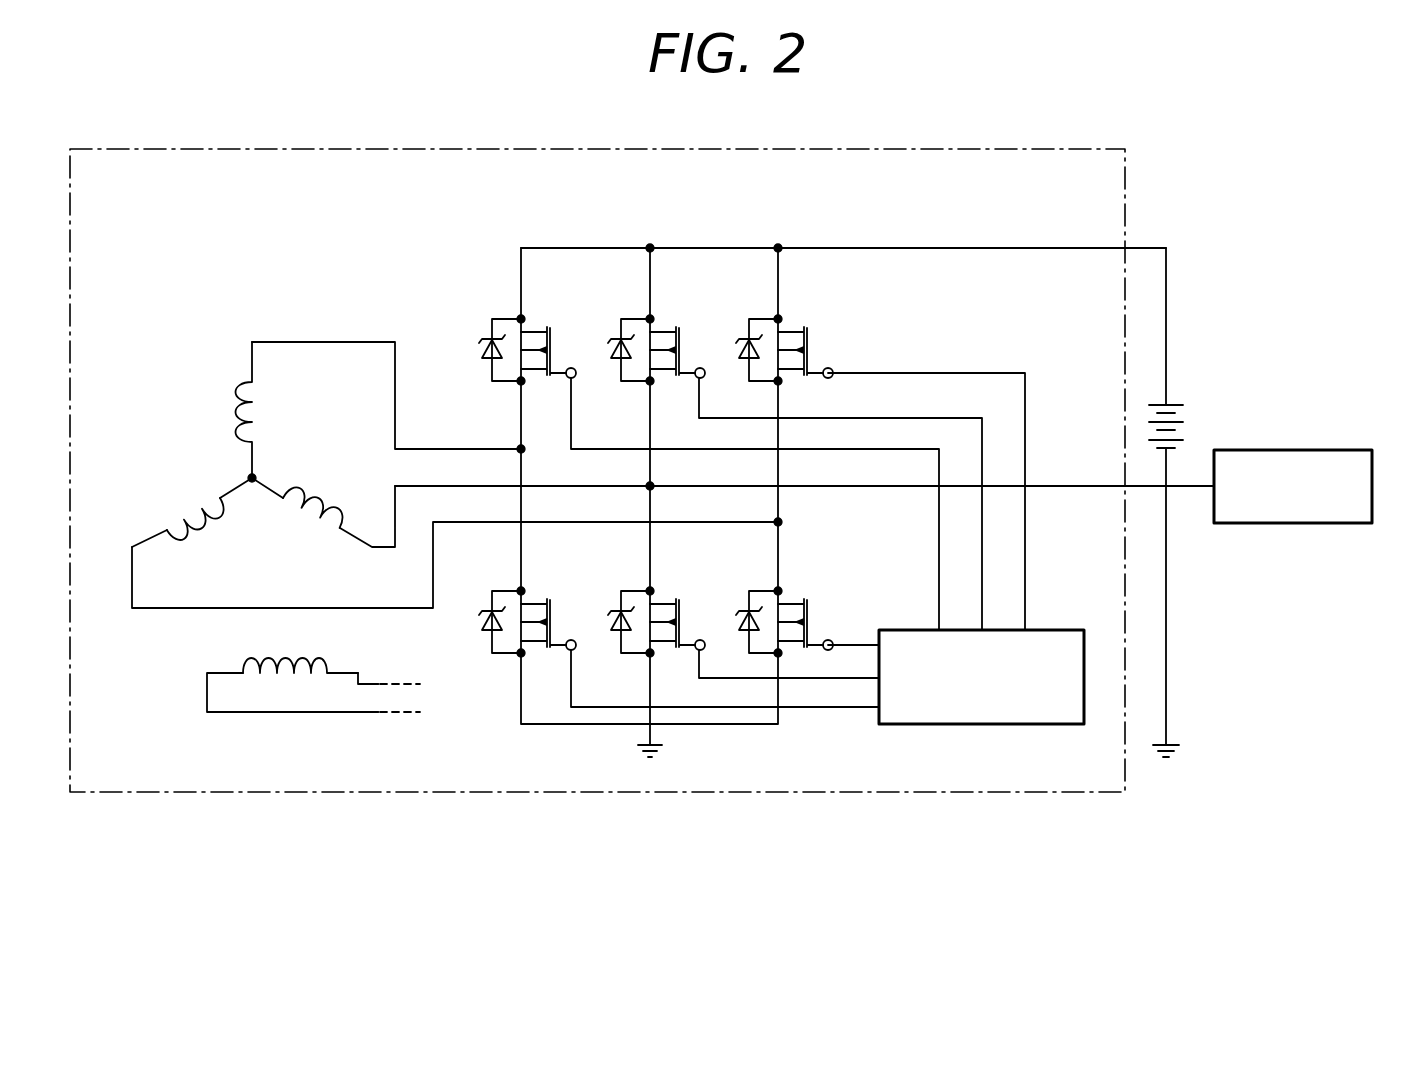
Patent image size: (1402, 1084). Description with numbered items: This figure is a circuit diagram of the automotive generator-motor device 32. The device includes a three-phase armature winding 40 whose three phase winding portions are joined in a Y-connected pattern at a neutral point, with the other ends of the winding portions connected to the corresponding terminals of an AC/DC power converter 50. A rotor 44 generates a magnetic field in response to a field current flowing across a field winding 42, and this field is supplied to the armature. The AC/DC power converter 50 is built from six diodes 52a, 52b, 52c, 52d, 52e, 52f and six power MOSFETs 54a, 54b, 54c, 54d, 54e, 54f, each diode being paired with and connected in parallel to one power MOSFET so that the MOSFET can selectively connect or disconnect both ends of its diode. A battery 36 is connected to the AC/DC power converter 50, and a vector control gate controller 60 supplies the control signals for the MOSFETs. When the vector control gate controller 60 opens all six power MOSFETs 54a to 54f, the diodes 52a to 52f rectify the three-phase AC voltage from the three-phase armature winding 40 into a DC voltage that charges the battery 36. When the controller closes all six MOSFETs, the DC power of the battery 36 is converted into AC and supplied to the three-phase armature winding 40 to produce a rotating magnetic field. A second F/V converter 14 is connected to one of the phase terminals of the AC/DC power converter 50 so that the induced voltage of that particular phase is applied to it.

The generator-motor device 32 is at (1072, 149).
The second F/V converter 14 is at (1318, 449).
The battery 36 is at (1179, 402).
The three-phase armature winding 40 is at (260, 324).
The field winding 42 is at (327, 667).
The rotor 44 is at (275, 697).
The AC/DC power converter 50 is at (724, 240).
The diode 52a is at (485, 339).
The diode 52b is at (614, 340).
The diode 52c is at (742, 340).
The diode 52d is at (485, 612).
The diode 52e is at (614, 612).
The diode 52f is at (742, 613).
The power MOSFET 54a is at (546, 335).
The power MOSFET 54b is at (675, 335).
The power MOSFET 54c is at (803, 335).
The power MOSFET 54d is at (546, 608).
The power MOSFET 54e is at (675, 608).
The power MOSFET 54f is at (803, 609).
The vector control gate controller 60 is at (1052, 630).